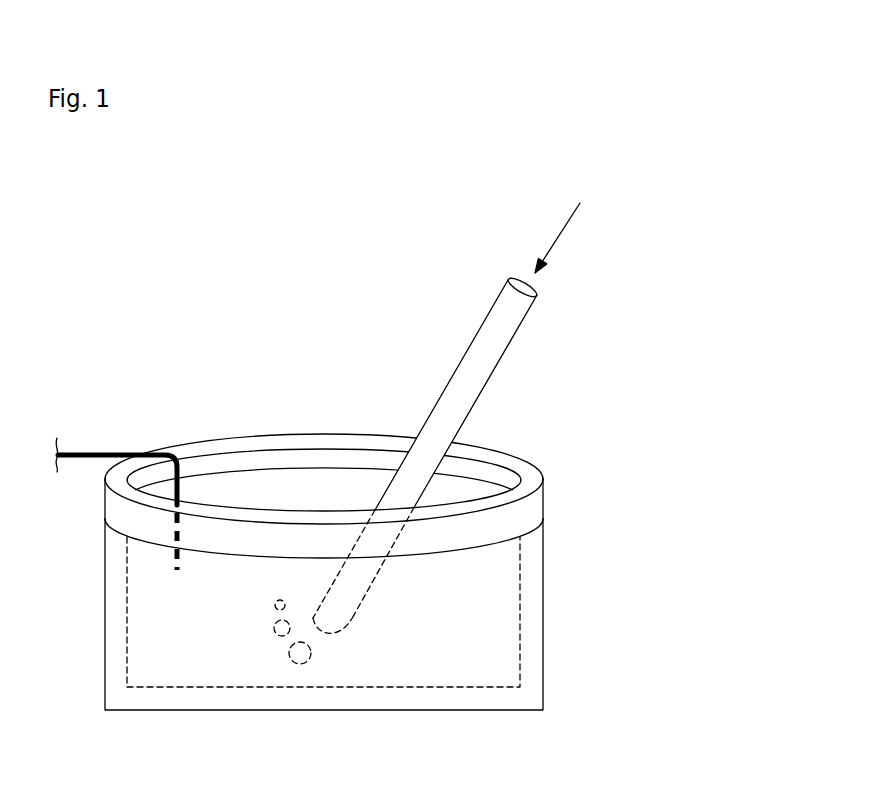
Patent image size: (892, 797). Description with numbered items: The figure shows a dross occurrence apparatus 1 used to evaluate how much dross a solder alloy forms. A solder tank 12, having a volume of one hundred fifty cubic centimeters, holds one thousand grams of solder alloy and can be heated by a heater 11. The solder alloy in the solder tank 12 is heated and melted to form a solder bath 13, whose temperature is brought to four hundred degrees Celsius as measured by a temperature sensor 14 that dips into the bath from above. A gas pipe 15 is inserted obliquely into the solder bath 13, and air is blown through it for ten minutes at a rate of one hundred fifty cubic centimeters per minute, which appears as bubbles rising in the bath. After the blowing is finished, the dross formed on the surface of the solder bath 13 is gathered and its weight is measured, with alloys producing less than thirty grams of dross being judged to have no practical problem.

The dross occurrence apparatus 1 is at (653, 121).
The heater 11 is at (533, 583).
The solder tank 12 is at (543, 503).
The solder bath 13 is at (150, 593).
The temperature sensor 14 is at (73, 458).
The gas pipe 15 is at (498, 367).